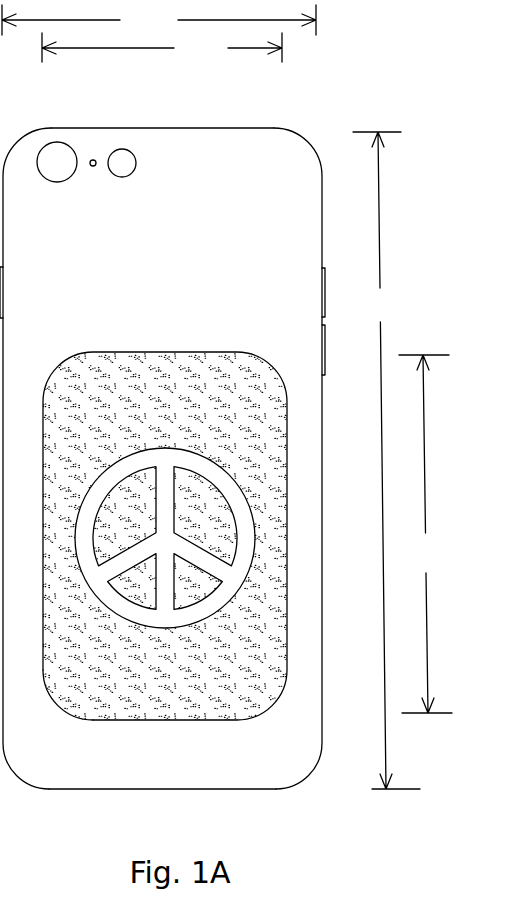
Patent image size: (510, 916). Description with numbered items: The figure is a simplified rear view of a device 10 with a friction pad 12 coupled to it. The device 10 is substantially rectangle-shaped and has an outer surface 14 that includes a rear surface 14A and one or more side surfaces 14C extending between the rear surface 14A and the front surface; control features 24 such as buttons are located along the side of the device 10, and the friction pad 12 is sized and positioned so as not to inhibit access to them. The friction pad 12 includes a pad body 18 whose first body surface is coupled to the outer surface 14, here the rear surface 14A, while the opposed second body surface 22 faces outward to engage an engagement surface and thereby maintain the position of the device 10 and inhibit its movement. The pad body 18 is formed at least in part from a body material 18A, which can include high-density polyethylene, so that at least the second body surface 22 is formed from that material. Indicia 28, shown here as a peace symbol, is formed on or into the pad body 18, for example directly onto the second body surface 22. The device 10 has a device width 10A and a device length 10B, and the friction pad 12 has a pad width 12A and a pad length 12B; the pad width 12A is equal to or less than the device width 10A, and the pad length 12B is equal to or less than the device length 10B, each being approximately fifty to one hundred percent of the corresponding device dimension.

The device 10 is at (181, 456).
The device width 10A is at (159, 20).
The device length 10B is at (386, 460).
The friction pad 12 is at (208, 600).
The pad width 12A is at (162, 47).
The pad length 12B is at (425, 534).
The outer surface 14 is at (173, 461).
The rear surface 14A is at (267, 760).
The side surfaces 14C is at (155, 128).
The pad body 18 is at (252, 653).
The body material 18A is at (113, 692).
The second body surface 22 is at (263, 603).
The control features 24 is at (323, 293).
The indicia 28 is at (245, 553).